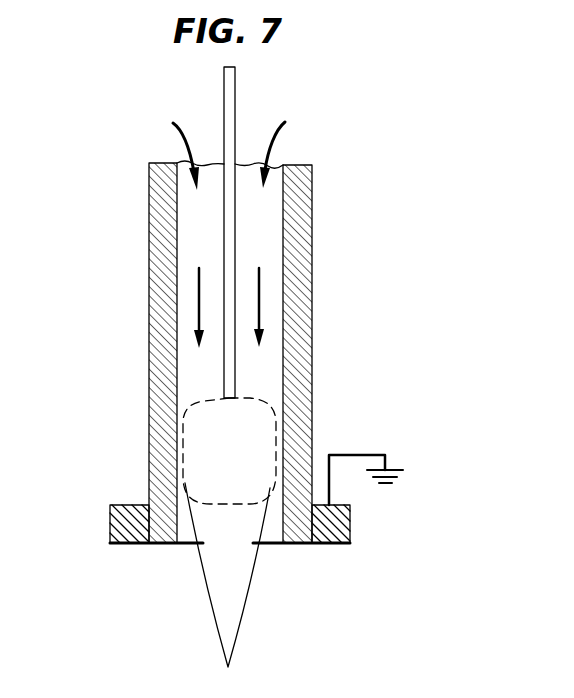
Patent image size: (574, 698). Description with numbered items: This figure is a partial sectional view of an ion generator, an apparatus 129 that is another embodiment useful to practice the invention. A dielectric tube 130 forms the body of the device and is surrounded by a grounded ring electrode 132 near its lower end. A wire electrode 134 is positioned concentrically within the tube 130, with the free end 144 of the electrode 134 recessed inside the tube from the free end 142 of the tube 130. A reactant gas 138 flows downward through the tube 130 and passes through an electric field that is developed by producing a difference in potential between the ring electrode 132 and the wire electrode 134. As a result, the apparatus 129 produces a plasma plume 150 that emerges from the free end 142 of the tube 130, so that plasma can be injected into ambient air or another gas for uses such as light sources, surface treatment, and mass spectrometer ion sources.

The apparatus 129 is at (470, 181).
The dielectric tube 130 is at (312, 275).
The grounded ring electrode 132 is at (350, 523).
The wire electrode 134 is at (223, 112).
The reactant gas 138 is at (283, 138).
The free end of the tube 142 is at (158, 545).
The free end of the electrode 144 is at (229, 400).
The plasma plume 150 is at (217, 608).